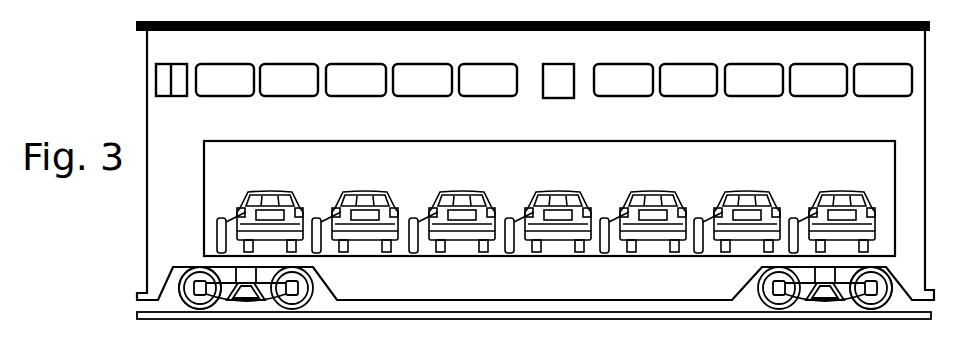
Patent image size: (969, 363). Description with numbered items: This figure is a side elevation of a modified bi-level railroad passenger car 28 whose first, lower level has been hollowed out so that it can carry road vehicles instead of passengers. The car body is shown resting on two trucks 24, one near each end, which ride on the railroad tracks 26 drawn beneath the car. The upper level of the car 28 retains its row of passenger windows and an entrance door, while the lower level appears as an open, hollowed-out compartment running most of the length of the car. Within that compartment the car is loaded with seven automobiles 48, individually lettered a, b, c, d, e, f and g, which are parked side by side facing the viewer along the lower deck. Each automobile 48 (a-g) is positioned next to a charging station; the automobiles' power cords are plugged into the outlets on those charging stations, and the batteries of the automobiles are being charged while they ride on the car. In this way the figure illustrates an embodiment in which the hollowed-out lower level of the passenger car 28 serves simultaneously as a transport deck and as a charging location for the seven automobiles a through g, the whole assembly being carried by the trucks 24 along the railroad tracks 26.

The trucks 24 is at (826, 327).
The railroad tracks 26 is at (899, 327).
The modified bi-level railroad passenger car 28 is at (556, 98).
The automobiles 48 is at (529, 196).
The automobile a is at (260, 207).
The automobile b is at (355, 207).
The automobile c is at (452, 207).
The automobile d is at (548, 207).
The automobile e is at (643, 207).
The automobile f is at (737, 207).
The automobile g is at (832, 207).